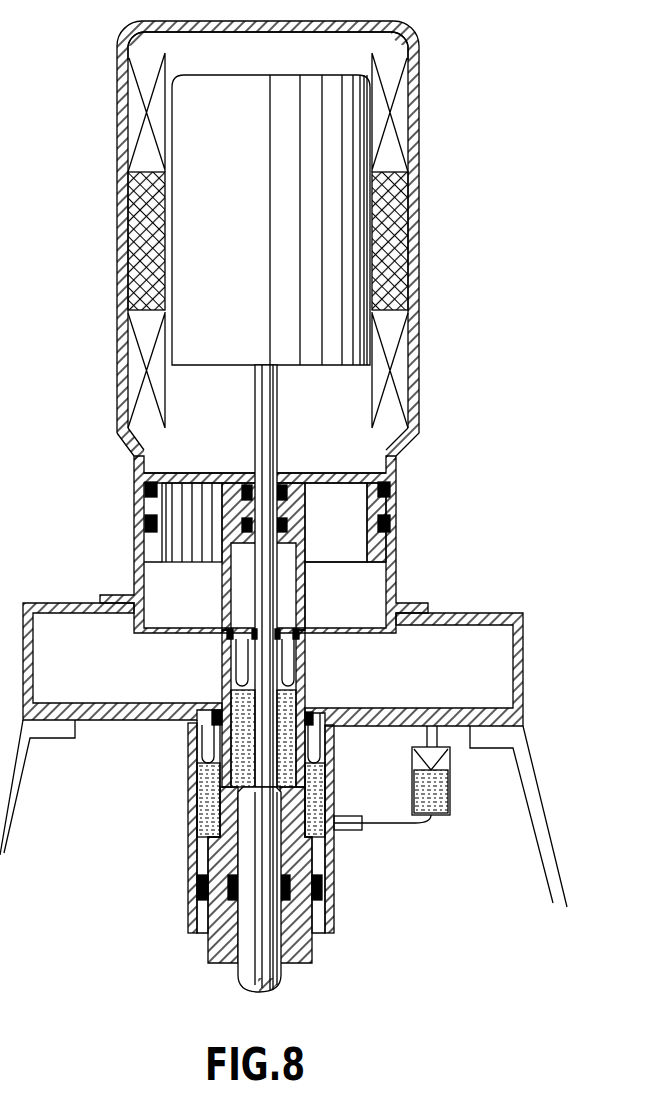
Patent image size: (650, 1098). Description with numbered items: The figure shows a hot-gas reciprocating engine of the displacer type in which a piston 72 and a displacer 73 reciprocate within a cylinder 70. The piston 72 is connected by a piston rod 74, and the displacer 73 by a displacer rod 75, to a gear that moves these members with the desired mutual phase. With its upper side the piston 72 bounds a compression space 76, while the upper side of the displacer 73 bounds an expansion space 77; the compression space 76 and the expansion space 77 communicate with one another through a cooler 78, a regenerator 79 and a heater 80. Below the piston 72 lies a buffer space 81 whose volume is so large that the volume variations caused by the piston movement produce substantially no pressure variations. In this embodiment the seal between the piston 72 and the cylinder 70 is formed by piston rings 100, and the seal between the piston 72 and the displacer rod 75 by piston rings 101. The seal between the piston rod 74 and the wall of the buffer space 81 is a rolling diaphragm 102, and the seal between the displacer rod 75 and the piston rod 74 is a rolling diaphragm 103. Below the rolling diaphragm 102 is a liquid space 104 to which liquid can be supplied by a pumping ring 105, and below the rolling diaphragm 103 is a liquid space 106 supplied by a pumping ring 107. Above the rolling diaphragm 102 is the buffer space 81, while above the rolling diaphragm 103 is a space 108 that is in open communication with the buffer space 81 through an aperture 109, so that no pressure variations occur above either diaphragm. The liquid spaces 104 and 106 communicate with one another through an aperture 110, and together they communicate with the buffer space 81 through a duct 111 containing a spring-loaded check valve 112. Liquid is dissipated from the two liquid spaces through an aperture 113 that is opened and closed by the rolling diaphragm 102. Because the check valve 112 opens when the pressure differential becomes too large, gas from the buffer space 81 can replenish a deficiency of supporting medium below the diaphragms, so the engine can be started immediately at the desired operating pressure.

The cylinder 70 is at (419, 358).
The piston 72 is at (150, 478).
The displacer 73 is at (254, 262).
The piston rod 74 is at (220, 613).
The displacer rod 75 is at (262, 588).
The compression space 76 is at (229, 433).
The expansion space 77 is at (292, 66).
The cooler 78 is at (128, 352).
The regenerator 79 is at (130, 240).
The heater 80 is at (128, 114).
The buffer space 81 is at (158, 676).
The piston rings 100 is at (390, 523).
The piston rings 101 is at (287, 510).
The rolling diaphragm 102 is at (204, 755).
The rolling diaphragm 103 is at (292, 665).
The liquid space 104 is at (190, 803).
The pumping ring 105 is at (197, 885).
The liquid space 106 is at (290, 775).
The pumping ring 107 is at (325, 912).
The space 108 is at (291, 604).
The aperture 109 is at (306, 572).
The aperture 110 is at (327, 858).
The duct 111 is at (405, 828).
The spring-loaded check valve 112 is at (450, 780).
The aperture 113 is at (188, 732).